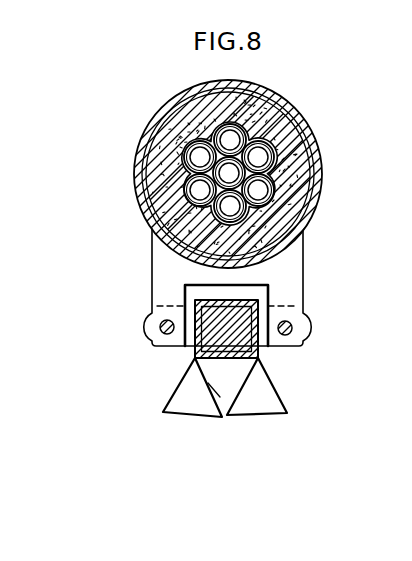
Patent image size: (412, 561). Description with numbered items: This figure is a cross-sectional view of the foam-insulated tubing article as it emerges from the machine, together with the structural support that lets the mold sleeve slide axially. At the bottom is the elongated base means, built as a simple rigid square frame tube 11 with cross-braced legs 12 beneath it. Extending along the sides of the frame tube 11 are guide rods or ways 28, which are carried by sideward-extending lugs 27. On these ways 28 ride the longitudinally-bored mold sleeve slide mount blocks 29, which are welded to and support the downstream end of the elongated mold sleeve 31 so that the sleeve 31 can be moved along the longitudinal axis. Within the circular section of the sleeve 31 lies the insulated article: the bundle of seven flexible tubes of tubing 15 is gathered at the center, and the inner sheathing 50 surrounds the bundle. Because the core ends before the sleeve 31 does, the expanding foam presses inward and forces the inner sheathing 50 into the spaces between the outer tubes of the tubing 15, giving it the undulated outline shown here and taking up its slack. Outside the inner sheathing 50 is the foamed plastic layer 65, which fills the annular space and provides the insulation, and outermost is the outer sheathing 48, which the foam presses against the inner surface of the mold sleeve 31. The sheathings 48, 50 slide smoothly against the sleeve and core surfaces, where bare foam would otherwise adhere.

The frame tube 11 is at (240, 330).
The cross-braced legs 12 is at (173, 389).
The tubing 15 is at (245, 193).
The lugs 27 is at (143, 327).
The guide rods or ways 28 is at (166, 334).
The mold sleeve slide mount blocks 29 is at (152, 257).
The mold sleeve 31 is at (312, 110).
The outer sheathing material 48 is at (288, 112).
The inner sheathing material 50 is at (210, 128).
The foamed plastic layer 65 is at (167, 148).